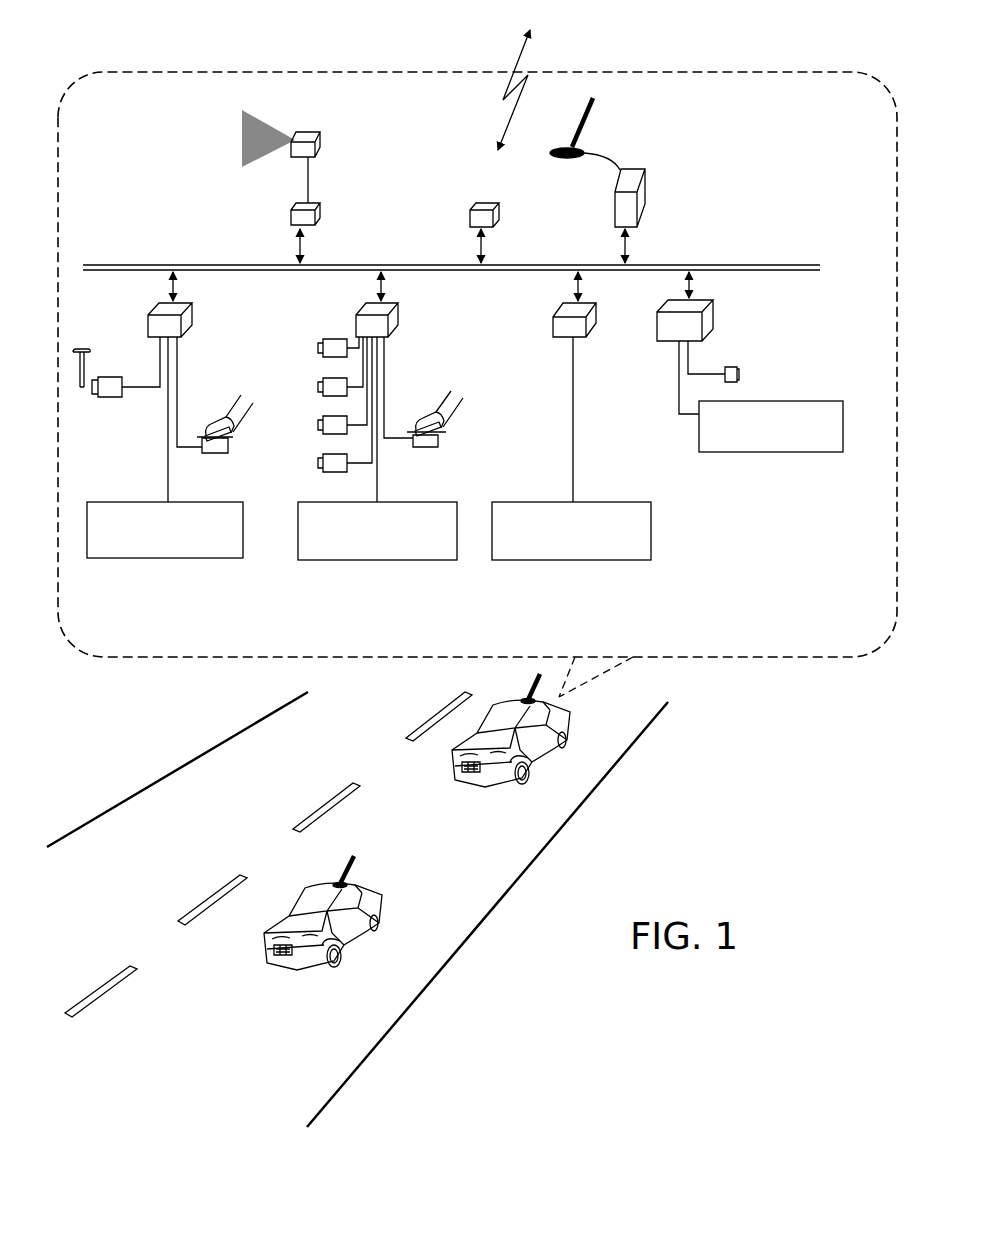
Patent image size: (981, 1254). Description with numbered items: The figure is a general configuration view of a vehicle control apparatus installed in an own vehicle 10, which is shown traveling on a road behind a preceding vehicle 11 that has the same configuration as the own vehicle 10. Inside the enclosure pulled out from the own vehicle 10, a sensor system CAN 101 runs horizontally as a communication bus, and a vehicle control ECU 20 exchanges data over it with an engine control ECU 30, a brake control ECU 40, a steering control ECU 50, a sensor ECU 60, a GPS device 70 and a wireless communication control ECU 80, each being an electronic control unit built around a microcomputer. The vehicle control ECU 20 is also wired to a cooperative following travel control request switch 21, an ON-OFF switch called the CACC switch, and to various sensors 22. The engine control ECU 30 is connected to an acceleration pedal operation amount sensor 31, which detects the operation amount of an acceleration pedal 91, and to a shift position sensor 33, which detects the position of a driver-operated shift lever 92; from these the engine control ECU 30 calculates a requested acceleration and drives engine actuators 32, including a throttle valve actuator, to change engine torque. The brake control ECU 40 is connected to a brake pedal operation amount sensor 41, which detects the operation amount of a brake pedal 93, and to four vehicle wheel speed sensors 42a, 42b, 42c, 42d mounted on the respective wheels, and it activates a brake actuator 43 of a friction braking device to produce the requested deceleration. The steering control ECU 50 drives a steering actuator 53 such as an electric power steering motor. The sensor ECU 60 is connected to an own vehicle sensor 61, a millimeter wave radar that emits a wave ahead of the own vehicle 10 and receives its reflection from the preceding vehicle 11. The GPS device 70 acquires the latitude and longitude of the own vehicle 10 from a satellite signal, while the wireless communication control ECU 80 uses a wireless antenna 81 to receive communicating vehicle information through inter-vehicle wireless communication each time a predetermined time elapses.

The own vehicle 10 is at (545, 750).
The preceding vehicle 11 is at (360, 930).
The vehicle control ECU 20 is at (713, 300).
The cooperative following travel control request switch 21 is at (731, 367).
The various sensors 22 is at (845, 415).
The engine control ECU 30 is at (202, 289).
The acceleration pedal operation amount sensor 31 is at (215, 453).
The engine actuators 32 is at (152, 558).
The shift position sensor 33 is at (107, 377).
The brake control ECU 40 is at (398, 303).
The brake pedal operation amount sensor 41 is at (425, 447).
The vehicle wheel speed sensor 42a is at (318, 349).
The vehicle wheel speed sensor 42b is at (318, 388).
The vehicle wheel speed sensor 42c is at (318, 426).
The vehicle wheel speed sensor 42d is at (318, 464).
The brake actuator 43 is at (373, 560).
The steering control ECU 50 is at (596, 303).
The steering actuator 53 is at (592, 560).
The sensor ECU 60 is at (313, 203).
The own vehicle sensor 61 is at (310, 132).
The GPS device 70 is at (486, 203).
The wireless communication control ECU 80 is at (640, 194).
The wireless antenna 81 is at (585, 119).
The acceleration pedal 91 is at (206, 430).
The shift lever 92 is at (82, 349).
The brake pedal 93 is at (416, 426).
The sensor system CAN 101 is at (435, 264).